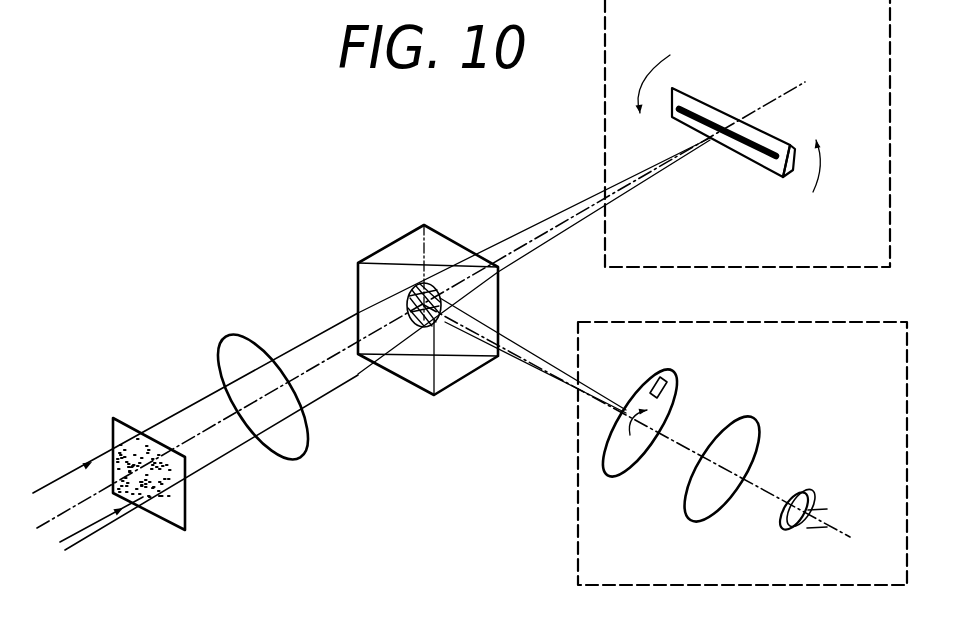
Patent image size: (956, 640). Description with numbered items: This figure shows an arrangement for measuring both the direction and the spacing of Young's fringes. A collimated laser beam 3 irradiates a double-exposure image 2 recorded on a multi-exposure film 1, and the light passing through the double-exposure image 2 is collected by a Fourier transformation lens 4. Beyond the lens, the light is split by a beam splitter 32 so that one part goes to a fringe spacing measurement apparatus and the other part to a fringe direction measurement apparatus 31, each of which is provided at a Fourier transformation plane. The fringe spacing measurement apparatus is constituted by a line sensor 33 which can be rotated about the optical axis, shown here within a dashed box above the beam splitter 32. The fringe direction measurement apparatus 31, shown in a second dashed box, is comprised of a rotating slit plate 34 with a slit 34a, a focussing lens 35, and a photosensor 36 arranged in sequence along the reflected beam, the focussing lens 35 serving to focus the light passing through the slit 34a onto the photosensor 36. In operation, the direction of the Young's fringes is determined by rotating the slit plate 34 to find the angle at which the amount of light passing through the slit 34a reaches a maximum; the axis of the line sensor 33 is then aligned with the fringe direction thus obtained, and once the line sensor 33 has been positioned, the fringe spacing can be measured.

The multi-exposure film 1 is at (122, 422).
The double-exposure image 2 is at (168, 484).
The collimated laser beam 3 is at (52, 525).
The Fourier transformation lens 4 is at (233, 334).
The fringe direction measurement apparatus 31 is at (612, 587).
The beam splitter 32 is at (402, 236).
The line sensor 33 is at (745, 160).
The rotating slit plate 34 is at (658, 372).
The slit 34a is at (670, 390).
The focussing lens 35 is at (758, 444).
The photosensor 36 is at (800, 489).